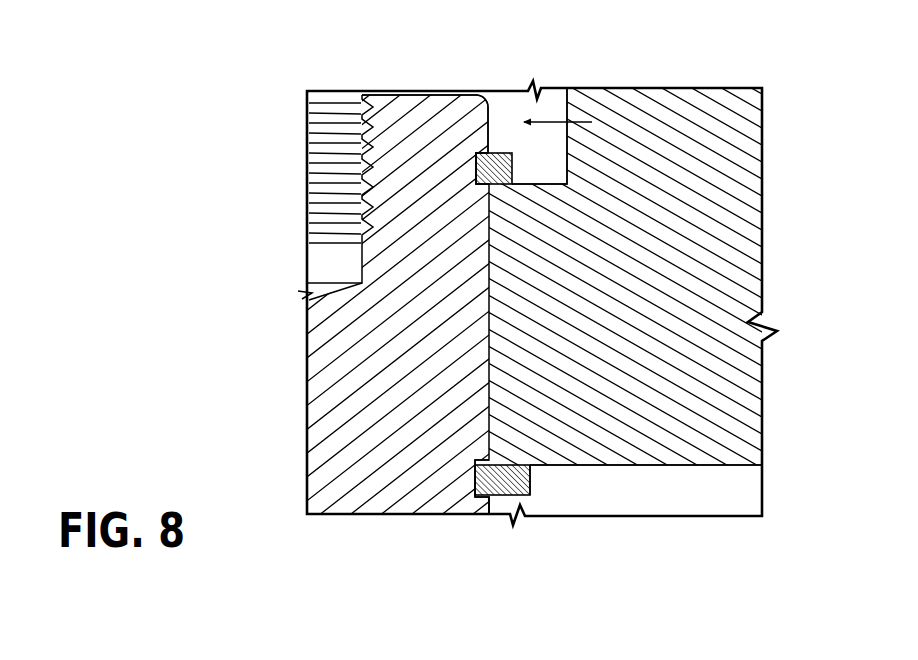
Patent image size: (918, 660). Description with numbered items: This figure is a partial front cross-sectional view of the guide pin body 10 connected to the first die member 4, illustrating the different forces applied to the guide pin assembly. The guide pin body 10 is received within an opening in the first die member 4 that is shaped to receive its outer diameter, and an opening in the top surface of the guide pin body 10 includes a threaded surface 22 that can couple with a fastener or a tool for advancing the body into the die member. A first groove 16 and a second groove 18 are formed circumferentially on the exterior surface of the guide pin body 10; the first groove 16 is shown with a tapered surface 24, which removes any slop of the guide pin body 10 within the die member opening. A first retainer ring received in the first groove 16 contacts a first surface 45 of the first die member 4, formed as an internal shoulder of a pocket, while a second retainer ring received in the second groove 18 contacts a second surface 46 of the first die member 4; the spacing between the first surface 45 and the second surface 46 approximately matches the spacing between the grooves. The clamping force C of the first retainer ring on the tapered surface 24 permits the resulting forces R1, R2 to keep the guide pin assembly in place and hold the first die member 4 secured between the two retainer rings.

The guide pin body 10 is at (365, 388).
The first die member 4 is at (722, 262).
The threaded surface 22 is at (335, 232).
The first groove 16 is at (476, 163).
The tapered surface 24 is at (488, 155).
The resulting force R1 is at (472, 142).
The resulting force R2 is at (499, 425).
The clamping force C is at (553, 183).
The first surface 45 is at (567, 155).
The second surface 46 is at (677, 468).
The second groove 18 is at (494, 498).